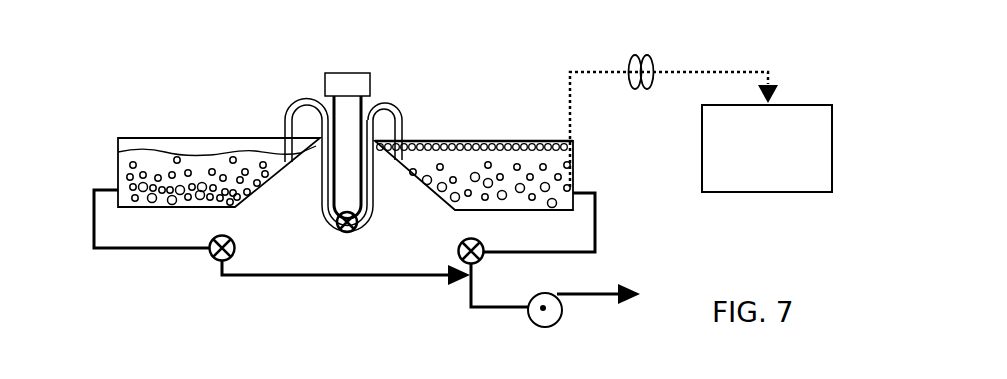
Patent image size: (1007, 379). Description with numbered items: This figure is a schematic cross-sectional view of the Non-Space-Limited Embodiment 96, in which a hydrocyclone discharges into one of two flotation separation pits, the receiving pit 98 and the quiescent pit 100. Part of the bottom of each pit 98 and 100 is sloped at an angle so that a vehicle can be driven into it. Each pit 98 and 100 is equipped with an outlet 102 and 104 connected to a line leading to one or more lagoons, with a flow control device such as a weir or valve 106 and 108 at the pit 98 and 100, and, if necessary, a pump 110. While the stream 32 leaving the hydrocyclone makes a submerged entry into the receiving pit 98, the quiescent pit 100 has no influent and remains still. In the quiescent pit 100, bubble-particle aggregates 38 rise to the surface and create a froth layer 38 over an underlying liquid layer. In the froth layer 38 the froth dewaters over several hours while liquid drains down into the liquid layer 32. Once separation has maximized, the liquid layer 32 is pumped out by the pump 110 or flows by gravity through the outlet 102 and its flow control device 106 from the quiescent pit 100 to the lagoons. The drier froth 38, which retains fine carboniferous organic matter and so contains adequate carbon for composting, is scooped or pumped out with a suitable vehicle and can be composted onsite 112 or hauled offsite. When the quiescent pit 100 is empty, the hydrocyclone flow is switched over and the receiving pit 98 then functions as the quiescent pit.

The Non-Space-Limited Embodiment 96 is at (83, 86).
The stream / liquid layer 32 is at (165, 156).
The froth layer 38 is at (480, 141).
The receiving pit 98 is at (117, 170).
The quiescent pit 100 is at (573, 165).
The outlet 102 is at (597, 222).
The outlet 104 is at (94, 222).
The flow control device 106 is at (484, 257).
The flow control device 108 is at (210, 254).
The pump 110 is at (528, 316).
The onsite composting 112 is at (832, 130).